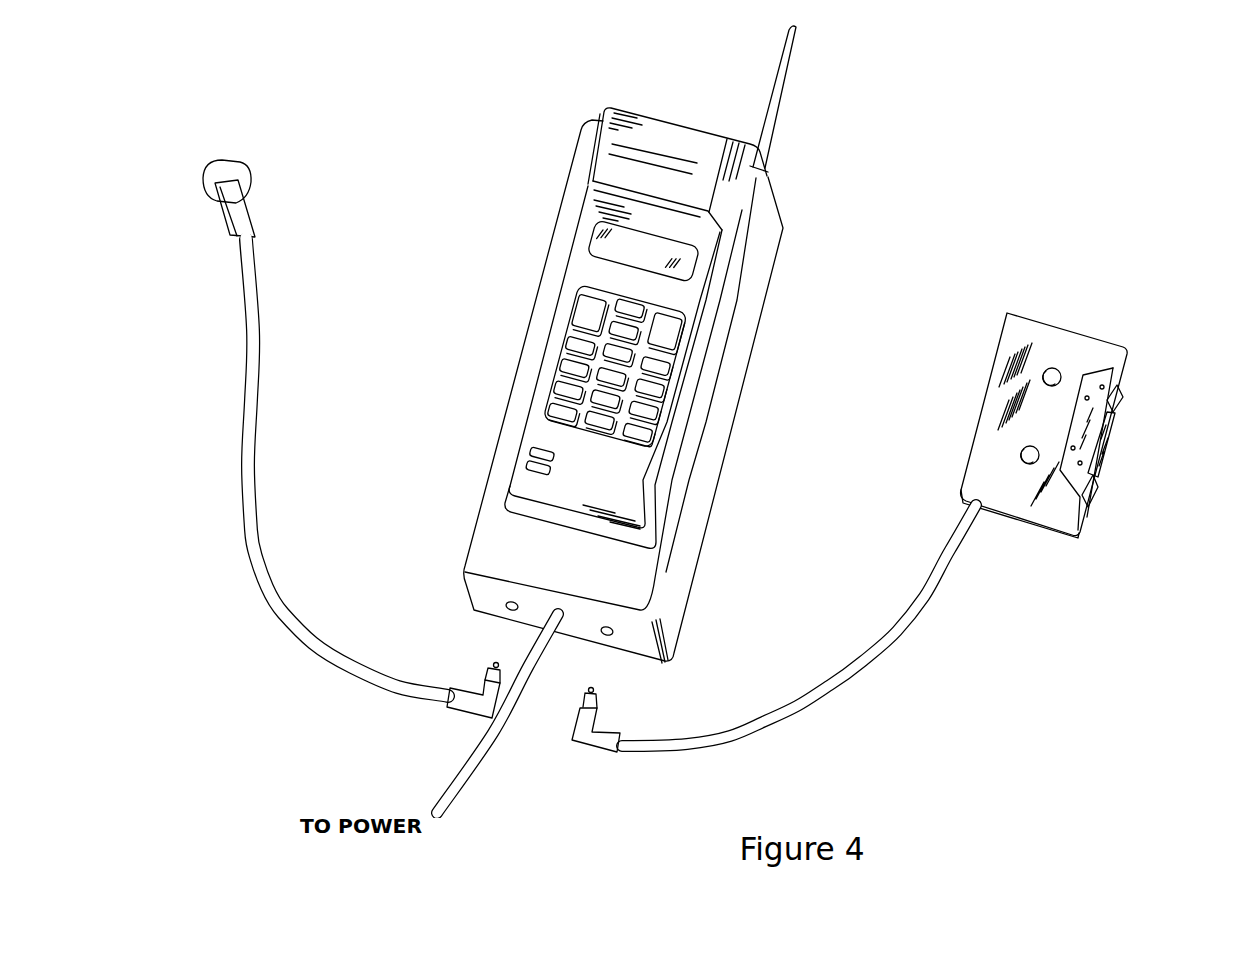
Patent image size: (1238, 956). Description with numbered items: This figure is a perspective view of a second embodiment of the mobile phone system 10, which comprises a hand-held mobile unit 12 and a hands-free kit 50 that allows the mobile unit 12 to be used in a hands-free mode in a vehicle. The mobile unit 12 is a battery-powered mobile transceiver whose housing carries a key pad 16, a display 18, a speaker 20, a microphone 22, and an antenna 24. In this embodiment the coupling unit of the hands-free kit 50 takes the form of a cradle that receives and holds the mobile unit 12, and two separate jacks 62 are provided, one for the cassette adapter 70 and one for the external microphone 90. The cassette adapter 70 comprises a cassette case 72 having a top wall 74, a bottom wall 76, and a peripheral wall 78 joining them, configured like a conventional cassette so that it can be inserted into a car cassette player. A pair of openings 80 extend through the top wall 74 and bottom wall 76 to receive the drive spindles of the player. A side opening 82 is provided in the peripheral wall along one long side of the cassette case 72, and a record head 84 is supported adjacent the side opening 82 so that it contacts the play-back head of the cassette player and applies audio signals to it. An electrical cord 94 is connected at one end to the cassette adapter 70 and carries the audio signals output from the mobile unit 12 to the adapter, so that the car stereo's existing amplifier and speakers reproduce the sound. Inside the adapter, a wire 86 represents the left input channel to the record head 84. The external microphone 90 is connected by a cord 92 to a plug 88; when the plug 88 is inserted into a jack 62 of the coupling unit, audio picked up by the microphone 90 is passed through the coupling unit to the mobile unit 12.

The mobile phone system 10 is at (956, 141).
The mobile unit 12 is at (650, 110).
The key pad 16 is at (662, 378).
The display 18 is at (690, 258).
The speaker 20 is at (637, 162).
The microphone 22 is at (523, 455).
The antenna 24 is at (788, 75).
The hands-free kit 50 is at (857, 288).
The jacks 62 is at (505, 606).
The cassette adapter 70 is at (1080, 298).
The cassette case 72 is at (971, 440).
The top wall 74 is at (992, 410).
The bottom wall 76 is at (1052, 537).
The peripheral wall 78 is at (1012, 520).
The openings 80 is at (1020, 458).
The side opening 82 is at (1108, 427).
The record head 84 is at (1100, 453).
The wire 86 is at (873, 663).
The plug 88 is at (590, 746).
The microphone 90 is at (230, 150).
The cord 92 is at (262, 583).
The electrical cord 94 is at (472, 712).